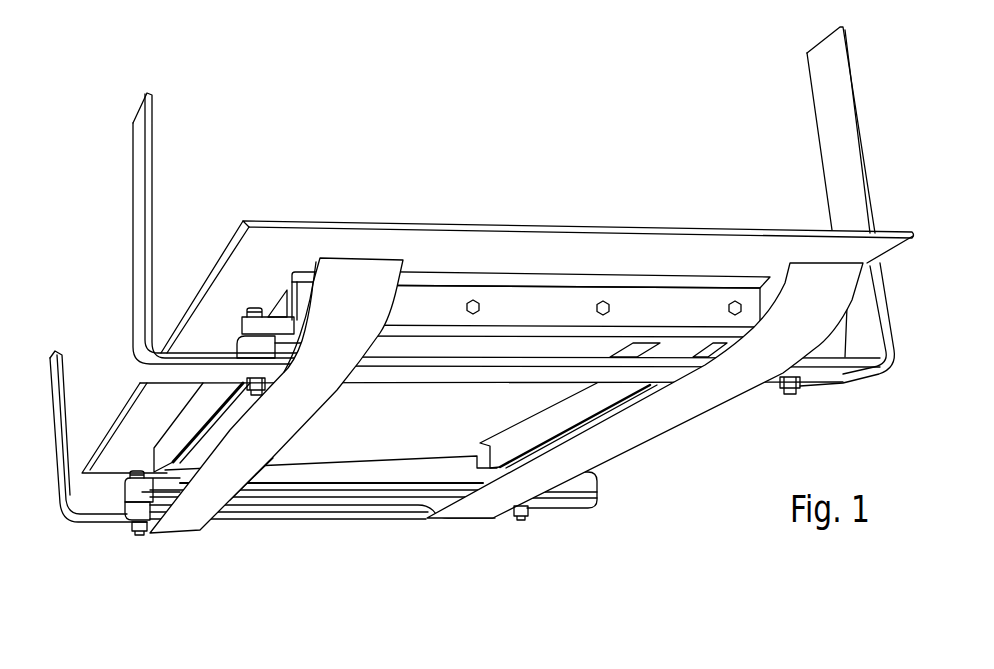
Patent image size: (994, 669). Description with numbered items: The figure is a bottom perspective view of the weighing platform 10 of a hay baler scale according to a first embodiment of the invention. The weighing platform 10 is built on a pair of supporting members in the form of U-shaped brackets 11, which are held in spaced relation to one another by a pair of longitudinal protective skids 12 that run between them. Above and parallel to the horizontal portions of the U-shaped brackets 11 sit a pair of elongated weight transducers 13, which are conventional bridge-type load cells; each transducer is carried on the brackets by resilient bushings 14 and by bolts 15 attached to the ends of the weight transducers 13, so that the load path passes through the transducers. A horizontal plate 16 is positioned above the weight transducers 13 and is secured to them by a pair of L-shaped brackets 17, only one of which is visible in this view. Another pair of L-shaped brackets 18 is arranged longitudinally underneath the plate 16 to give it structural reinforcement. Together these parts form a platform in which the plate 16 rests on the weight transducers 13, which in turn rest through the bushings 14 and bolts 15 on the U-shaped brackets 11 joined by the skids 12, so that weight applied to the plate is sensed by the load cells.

The weighing platform 10 is at (555, 195).
The U-shaped brackets 11 is at (155, 187).
The longitudinal protective skids 12 is at (190, 530).
The weight transducers 13 is at (242, 330).
The resilient bushings 14 is at (246, 350).
The bolts 15 is at (257, 393).
The horizontal plate 16 is at (463, 222).
The L-shaped brackets 17 is at (296, 290).
The L-shaped brackets 18 is at (185, 433).